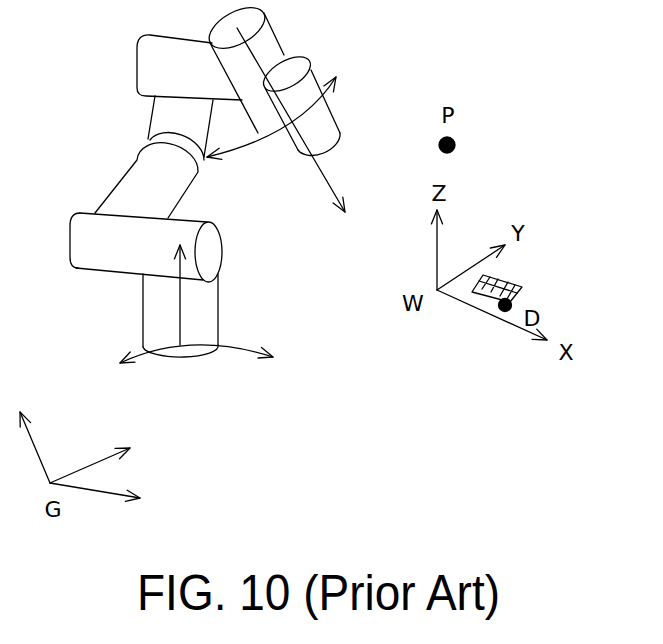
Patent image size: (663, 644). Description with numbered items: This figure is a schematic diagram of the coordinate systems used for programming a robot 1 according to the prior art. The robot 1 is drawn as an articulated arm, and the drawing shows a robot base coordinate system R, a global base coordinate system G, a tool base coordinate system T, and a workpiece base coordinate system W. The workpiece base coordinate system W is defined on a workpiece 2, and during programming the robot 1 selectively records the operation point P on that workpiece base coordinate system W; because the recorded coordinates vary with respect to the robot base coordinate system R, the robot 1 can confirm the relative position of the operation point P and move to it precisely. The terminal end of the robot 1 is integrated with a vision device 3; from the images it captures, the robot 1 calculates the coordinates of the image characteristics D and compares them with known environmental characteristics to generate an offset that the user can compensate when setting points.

The robot 1 is at (132, 178).
The workpiece 2 is at (510, 286).
The vision device 3 is at (312, 73).